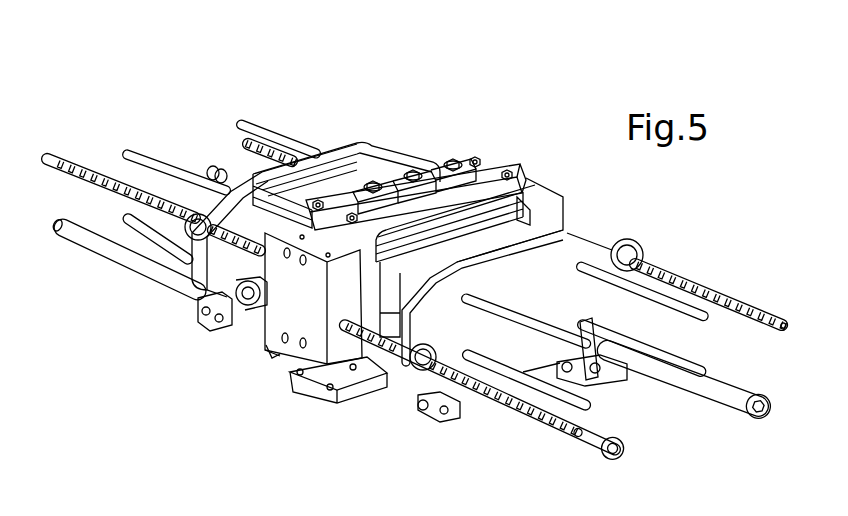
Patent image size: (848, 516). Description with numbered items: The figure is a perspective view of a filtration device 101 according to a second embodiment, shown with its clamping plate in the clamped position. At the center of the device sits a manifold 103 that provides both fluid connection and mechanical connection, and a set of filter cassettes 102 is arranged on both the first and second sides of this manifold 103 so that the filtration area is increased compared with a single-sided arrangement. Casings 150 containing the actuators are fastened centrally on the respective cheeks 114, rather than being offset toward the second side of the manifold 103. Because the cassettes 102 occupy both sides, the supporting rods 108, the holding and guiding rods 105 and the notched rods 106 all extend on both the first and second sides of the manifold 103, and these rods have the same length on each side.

The filtration device 101 is at (426, 94).
The filter cassettes 102 is at (347, 177).
The manifold 103 is at (437, 158).
The holding and guiding rods 105 is at (696, 372).
The notched rods 106 is at (503, 405).
The supporting rods 108 is at (580, 443).
The cheeks 114 is at (330, 235).
The casings 150 is at (272, 328).